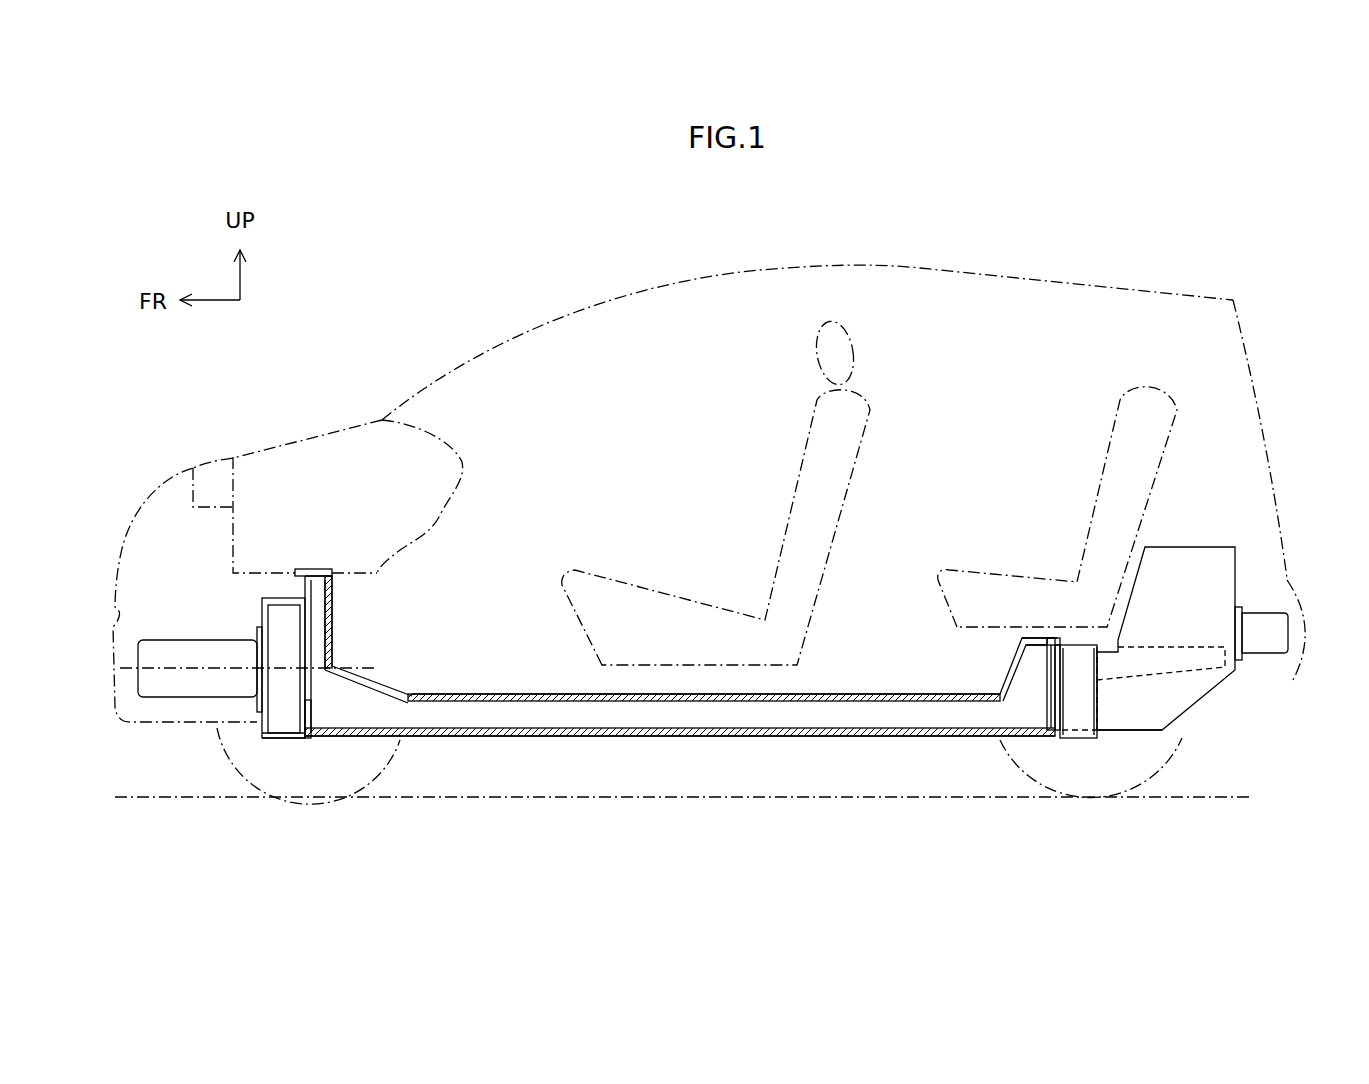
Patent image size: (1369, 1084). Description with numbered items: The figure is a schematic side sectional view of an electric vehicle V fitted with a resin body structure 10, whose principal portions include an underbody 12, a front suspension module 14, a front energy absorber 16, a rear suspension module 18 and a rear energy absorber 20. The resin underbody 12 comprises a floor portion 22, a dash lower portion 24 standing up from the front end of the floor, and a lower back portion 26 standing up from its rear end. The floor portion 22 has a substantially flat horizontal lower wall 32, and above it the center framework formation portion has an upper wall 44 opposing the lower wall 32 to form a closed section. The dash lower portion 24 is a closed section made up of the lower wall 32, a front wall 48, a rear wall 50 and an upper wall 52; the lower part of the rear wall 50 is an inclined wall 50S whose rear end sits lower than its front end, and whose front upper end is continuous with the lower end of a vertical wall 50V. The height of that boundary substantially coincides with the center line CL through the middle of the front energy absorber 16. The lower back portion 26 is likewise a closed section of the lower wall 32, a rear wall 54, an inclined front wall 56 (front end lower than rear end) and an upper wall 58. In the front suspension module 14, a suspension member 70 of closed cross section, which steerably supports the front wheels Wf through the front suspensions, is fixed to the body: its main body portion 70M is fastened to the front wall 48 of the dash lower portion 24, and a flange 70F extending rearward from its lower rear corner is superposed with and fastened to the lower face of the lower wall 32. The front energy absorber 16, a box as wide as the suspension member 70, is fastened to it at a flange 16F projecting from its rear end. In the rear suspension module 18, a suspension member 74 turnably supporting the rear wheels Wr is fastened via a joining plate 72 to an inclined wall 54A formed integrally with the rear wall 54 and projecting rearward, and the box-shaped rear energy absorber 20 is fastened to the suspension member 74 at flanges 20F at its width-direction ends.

The vehicle V is at (740, 268).
The center line CL is at (200, 668).
The front wheels Wf is at (373, 778).
The rear wheels Wr is at (1157, 773).
The resin body structure 10 is at (680, 790).
The underbody 12 is at (580, 740).
The front suspension module 14 is at (280, 742).
The front energy absorber 16 is at (166, 700).
The flange 16F is at (255, 702).
The rear suspension module 18 is at (1125, 737).
The rear energy absorber 20 is at (1292, 655).
The flanges 20F is at (1250, 607).
The floor portion 22 is at (530, 690).
The dash lower portion 24 is at (334, 628).
The lower back portion 26 is at (995, 650).
The lower wall 32 is at (830, 738).
The upper wall 44 is at (704, 656).
The front wall 48 is at (308, 692).
The rear wall 50 is at (406, 714).
The vertical wall 50V is at (384, 657).
The inclined wall 50S is at (388, 686).
The upper wall 52 is at (315, 568).
The rear wall 54 is at (1026, 679).
The inclined wall 54A is at (1060, 645).
The front wall 56 is at (985, 668).
The upper wall 58 is at (1043, 638).
The suspension member 70 is at (254, 725).
The main body portion 70M is at (283, 620).
The flange 70F is at (335, 740).
The joining plate 72 is at (1099, 763).
The suspension member 74 is at (1107, 734).